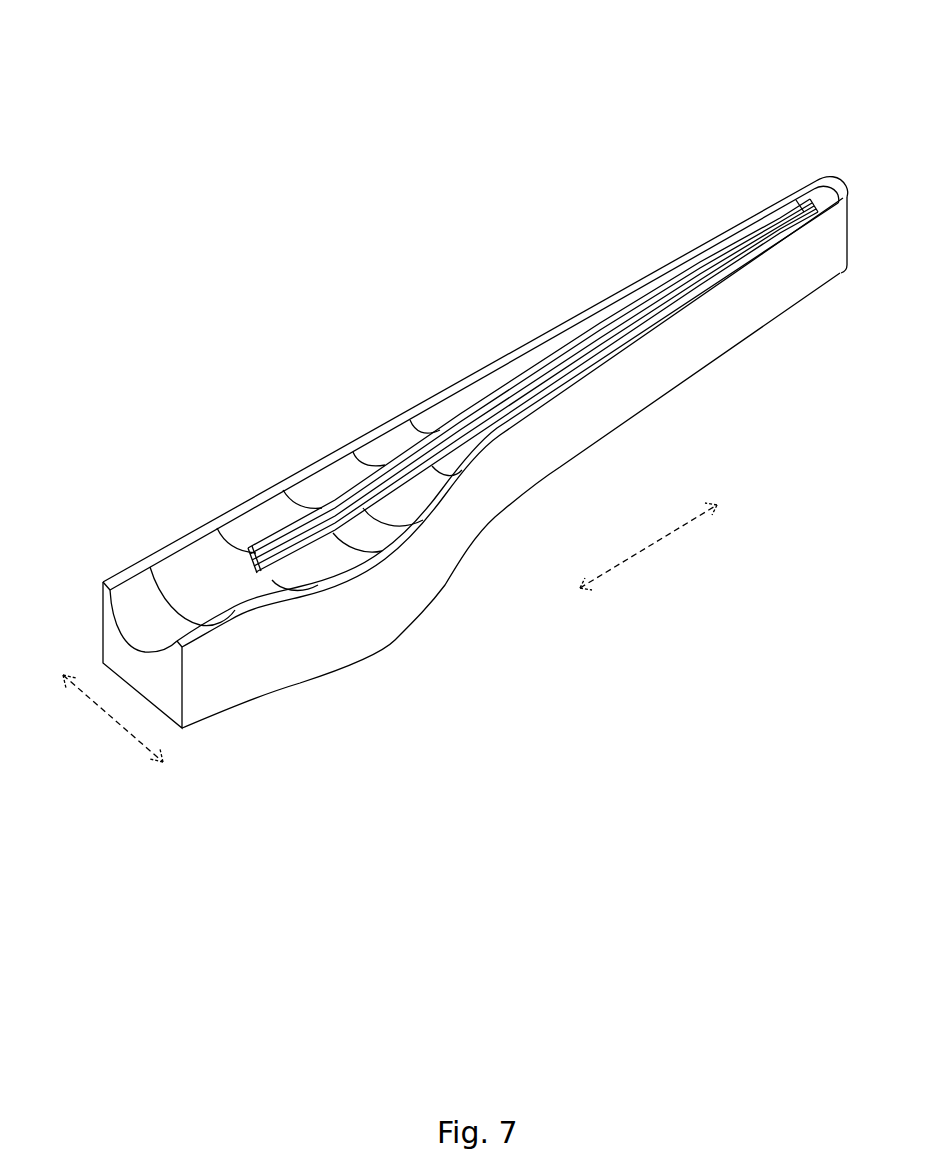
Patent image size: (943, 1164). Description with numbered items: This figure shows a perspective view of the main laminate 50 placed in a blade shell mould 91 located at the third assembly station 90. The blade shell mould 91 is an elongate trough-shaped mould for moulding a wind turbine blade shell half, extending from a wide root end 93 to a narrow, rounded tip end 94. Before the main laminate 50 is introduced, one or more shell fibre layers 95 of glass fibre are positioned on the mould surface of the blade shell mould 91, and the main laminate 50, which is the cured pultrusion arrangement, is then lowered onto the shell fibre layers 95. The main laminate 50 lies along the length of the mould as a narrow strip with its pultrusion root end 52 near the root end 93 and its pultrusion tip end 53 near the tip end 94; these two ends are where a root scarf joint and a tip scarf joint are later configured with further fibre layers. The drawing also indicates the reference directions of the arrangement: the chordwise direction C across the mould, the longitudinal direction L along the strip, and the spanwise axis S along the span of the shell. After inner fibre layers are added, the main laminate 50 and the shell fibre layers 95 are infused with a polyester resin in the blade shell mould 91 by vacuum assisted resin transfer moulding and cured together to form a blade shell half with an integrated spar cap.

The third assembly station 90 is at (337, 155).
The blade shell mould 91 is at (254, 650).
The root end 93 is at (135, 573).
The shell fibre layer 95 is at (295, 487).
The tip end 94 is at (842, 182).
The main laminate 50 is at (441, 440).
The pultrusion root end 52 is at (255, 545).
The pultrusion tip end 53 is at (803, 182).
The chordwise direction C is at (113, 717).
The longitudinal direction L is at (610, 570).
The spanwise axis S is at (685, 523).